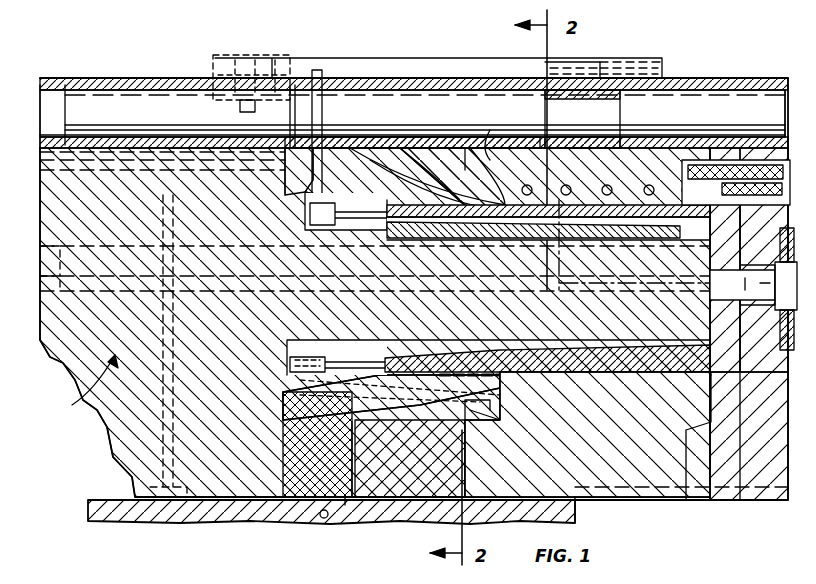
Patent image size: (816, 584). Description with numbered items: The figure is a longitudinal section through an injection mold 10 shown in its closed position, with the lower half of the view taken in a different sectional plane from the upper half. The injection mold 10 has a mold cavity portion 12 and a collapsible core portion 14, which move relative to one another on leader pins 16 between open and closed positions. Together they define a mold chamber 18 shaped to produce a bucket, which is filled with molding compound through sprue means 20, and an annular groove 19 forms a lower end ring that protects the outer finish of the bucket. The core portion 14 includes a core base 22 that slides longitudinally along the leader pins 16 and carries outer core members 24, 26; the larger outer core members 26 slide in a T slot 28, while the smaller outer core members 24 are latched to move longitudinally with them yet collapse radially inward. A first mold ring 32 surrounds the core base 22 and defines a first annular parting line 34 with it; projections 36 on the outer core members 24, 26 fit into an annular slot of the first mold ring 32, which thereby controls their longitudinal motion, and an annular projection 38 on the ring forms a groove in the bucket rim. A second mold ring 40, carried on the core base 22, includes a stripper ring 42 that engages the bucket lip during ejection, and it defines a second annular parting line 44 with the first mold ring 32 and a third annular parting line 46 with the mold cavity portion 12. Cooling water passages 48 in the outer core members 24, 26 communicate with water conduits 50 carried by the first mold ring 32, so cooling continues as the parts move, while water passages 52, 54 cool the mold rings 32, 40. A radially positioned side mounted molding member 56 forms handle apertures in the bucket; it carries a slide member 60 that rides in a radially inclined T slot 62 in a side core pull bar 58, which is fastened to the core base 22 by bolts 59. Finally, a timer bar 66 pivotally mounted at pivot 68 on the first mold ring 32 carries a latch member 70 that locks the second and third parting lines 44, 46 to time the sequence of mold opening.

The injection mold 10 is at (715, 72).
The mold cavity portion 12 is at (591, 439).
The collapsible core portion 14 is at (85, 381).
The leader pins 16 is at (174, 117).
The mold chamber 18 is at (668, 380).
The annular groove 19 is at (700, 395).
The sprue means 20 is at (757, 262).
The core base 22 is at (232, 341).
The smaller outer core members 24 is at (674, 359).
The larger outer core members 26 is at (548, 222).
The T slot 28 is at (590, 240).
The first mold ring 32 is at (364, 193).
The first annular parting line 34 is at (285, 195).
The projections 36 is at (432, 184).
The annular projection 38 is at (470, 188).
The second mold ring 40 is at (452, 166).
The stripper ring 42 is at (527, 184).
The second annular parting line 44 is at (396, 137).
The third annular parting line 46 is at (492, 132).
The cooling water passages 48 is at (410, 215).
The water conduits 50 is at (308, 210).
The water passage 52 is at (420, 395).
The water passage 54 is at (443, 477).
The side mounted molding member 56 is at (560, 118).
The side core pull bar 58 is at (418, 66).
The bolts 59 is at (268, 62).
The slide member 60 is at (560, 70).
The T slot 62 is at (624, 70).
The timer bar 66 is at (262, 518).
The pivot 68 is at (312, 520).
The latch member 70 is at (348, 508).